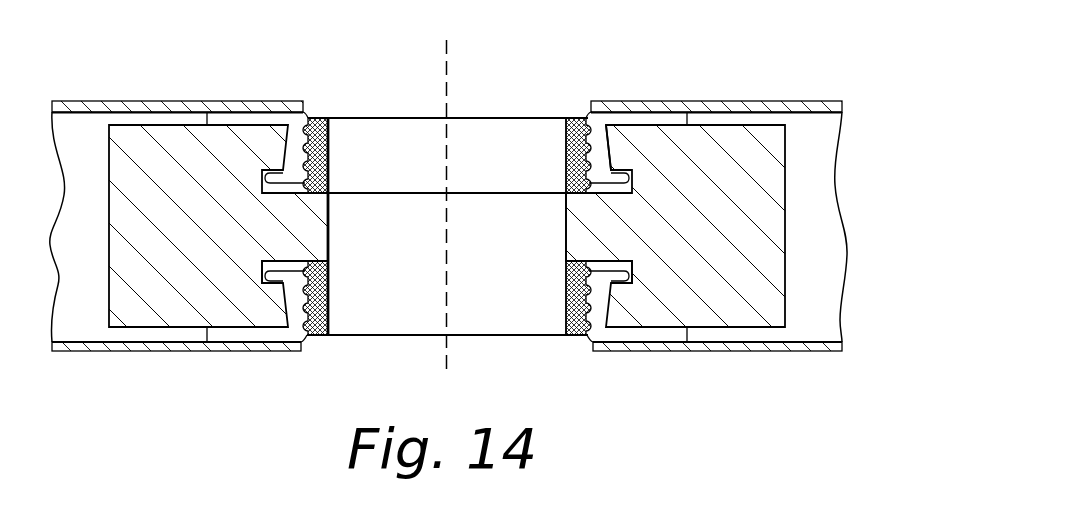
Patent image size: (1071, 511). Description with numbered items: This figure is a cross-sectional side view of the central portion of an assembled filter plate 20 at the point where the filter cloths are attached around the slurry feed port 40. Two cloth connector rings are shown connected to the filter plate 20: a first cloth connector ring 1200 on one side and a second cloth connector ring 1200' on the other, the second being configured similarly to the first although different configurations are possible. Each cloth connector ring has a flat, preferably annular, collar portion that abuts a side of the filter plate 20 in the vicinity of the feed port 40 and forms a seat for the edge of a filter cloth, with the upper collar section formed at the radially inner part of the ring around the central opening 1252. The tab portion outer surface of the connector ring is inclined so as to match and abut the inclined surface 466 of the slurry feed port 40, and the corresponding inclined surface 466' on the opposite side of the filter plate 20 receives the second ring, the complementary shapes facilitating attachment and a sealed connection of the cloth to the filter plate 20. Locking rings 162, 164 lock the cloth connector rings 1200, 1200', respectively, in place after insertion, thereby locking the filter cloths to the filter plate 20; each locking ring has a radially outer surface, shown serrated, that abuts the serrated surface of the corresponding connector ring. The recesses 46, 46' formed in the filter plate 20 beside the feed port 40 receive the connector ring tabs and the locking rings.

The filter plate 20 is at (196, 232).
The slurry feed port 40 is at (408, 147).
The groove 46 is at (242, 283).
The groove 46' is at (642, 327).
The locking ring 162 is at (318, 112).
The locking ring 164 is at (575, 317).
The inclined surface 466 is at (254, 350).
The retaining lip 466' is at (645, 111).
The cloth connector ring 1200 is at (179, 195).
The cloth connector ring 1200' is at (450, 255).
The central opening 1252 is at (562, 104).